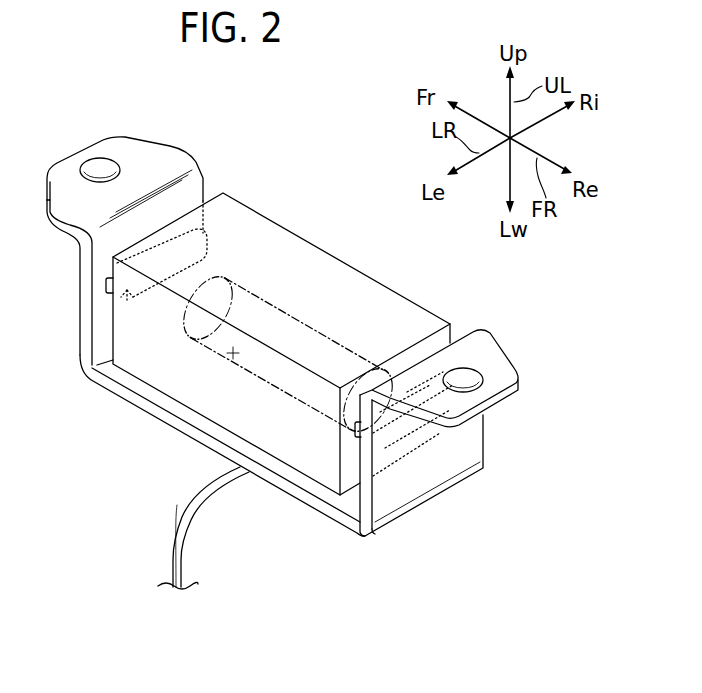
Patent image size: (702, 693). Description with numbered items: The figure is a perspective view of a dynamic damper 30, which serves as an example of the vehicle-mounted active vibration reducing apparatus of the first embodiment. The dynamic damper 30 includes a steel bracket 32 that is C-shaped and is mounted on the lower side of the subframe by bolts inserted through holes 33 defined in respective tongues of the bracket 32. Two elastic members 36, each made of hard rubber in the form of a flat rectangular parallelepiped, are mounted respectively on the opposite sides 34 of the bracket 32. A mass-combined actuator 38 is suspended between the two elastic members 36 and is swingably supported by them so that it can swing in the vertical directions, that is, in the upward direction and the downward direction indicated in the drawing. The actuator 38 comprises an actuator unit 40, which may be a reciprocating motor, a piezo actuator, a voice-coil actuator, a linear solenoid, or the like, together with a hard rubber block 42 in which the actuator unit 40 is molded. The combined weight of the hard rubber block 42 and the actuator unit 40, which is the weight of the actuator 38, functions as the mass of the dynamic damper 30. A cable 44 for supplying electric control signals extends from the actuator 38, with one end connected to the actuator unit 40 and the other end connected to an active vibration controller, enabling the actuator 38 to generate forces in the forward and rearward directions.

The dynamic damper 30 is at (281, 203).
The bracket 32 is at (186, 434).
The holes 33 is at (90, 167).
The opposite sides 34 is at (97, 330).
The elastic members 36 is at (107, 287).
The mass-combined actuator 38 is at (137, 459).
The actuator unit 40 is at (129, 416).
The hard rubber block 42 is at (138, 363).
The cable 44 is at (181, 560).